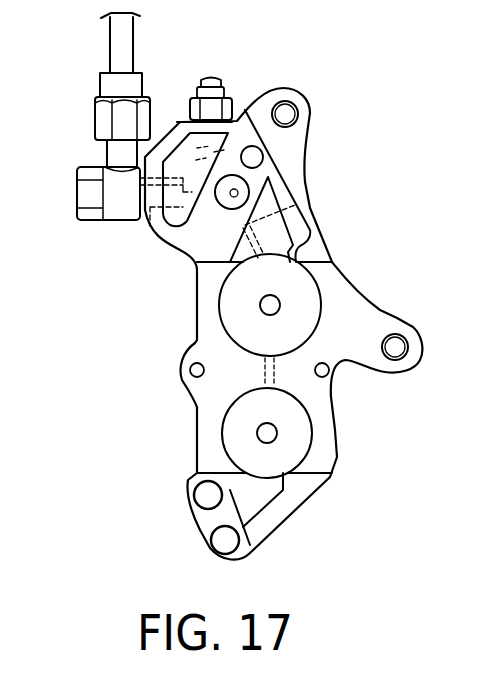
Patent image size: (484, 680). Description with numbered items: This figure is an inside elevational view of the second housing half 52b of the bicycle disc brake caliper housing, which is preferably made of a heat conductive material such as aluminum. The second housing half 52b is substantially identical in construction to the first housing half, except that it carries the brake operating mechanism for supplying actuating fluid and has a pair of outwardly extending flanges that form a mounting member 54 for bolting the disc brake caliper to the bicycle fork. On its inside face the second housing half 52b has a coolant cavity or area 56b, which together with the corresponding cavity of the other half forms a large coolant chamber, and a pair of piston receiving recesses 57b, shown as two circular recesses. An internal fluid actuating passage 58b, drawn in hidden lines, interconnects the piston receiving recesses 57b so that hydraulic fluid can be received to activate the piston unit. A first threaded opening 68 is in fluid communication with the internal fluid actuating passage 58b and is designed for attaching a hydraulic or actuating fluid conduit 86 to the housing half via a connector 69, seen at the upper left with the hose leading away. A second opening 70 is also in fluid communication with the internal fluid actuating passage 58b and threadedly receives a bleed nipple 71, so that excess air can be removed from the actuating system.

The hydraulic fluid conduit 86 is at (108, 46).
The connector 69 is at (98, 221).
The first threaded opening 68 is at (150, 228).
The coolant cavity 56b is at (183, 150).
The bleed nipple 71 is at (218, 86).
The second opening 70 is at (243, 110).
The mounting member 54 is at (312, 128).
The internal fluid actuating passage 58b is at (310, 197).
The piston receiving recesses 57b is at (245, 402).
The second housing half 52b is at (188, 404).